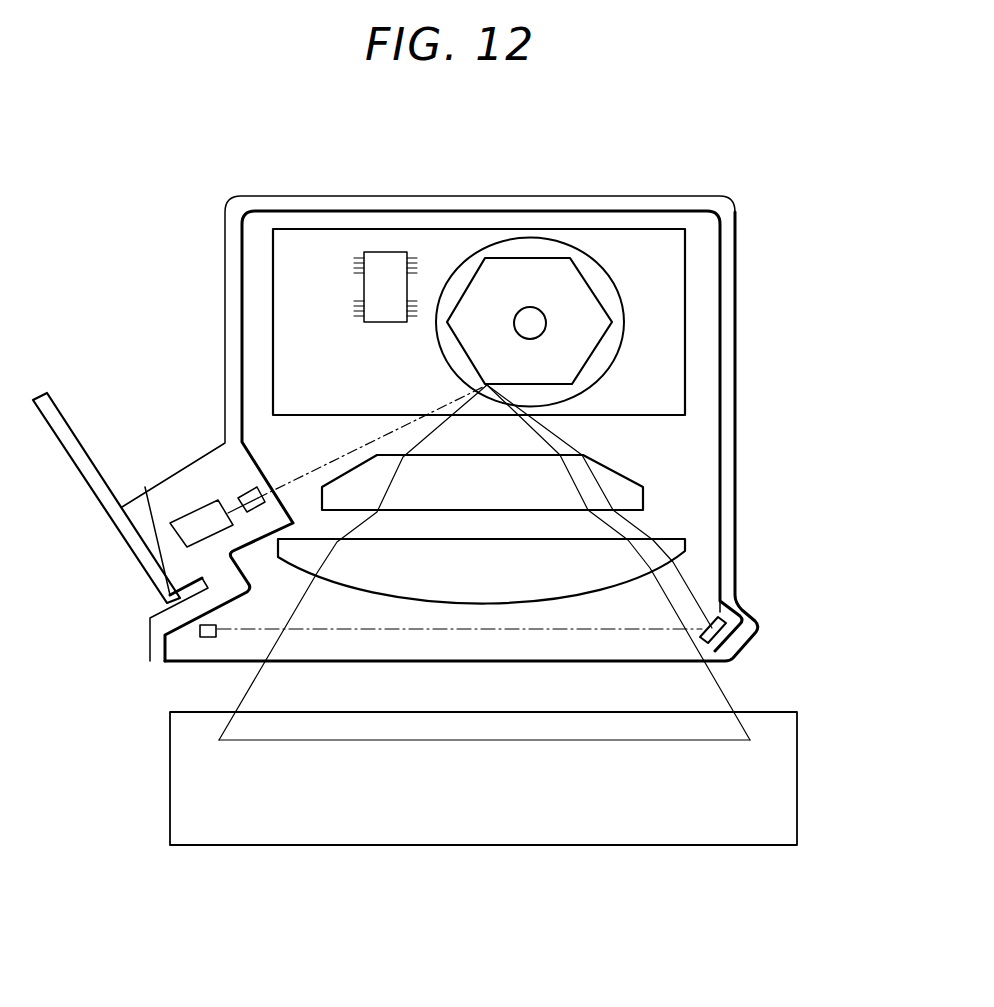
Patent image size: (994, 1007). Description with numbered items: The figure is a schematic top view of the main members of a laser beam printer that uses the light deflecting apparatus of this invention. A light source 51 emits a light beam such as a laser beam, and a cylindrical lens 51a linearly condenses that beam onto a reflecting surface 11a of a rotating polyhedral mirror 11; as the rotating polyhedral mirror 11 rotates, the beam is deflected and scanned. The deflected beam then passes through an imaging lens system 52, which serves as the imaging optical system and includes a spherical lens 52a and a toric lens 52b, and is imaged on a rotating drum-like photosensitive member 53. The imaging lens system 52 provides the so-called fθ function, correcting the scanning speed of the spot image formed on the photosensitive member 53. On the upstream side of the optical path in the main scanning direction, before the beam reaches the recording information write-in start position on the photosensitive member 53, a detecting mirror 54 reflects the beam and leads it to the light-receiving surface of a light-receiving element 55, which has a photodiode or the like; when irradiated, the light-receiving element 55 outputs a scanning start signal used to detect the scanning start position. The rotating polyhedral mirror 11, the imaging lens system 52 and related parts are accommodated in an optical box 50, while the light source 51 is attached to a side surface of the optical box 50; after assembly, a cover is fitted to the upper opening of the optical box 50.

The optical box 50 is at (662, 196).
The rotating polyhedral mirror 11 is at (630, 322).
The reflecting surface 11a is at (583, 275).
The light source 51 is at (155, 543).
The cylindrical lens 51a is at (243, 495).
The imaging lens system 52 is at (585, 529).
The spherical lens 52a is at (633, 495).
The toric lens 52b is at (683, 543).
The photosensitive member 53 is at (782, 777).
The detecting mirror 54 is at (728, 630).
The light-receiving element 55 is at (207, 638).